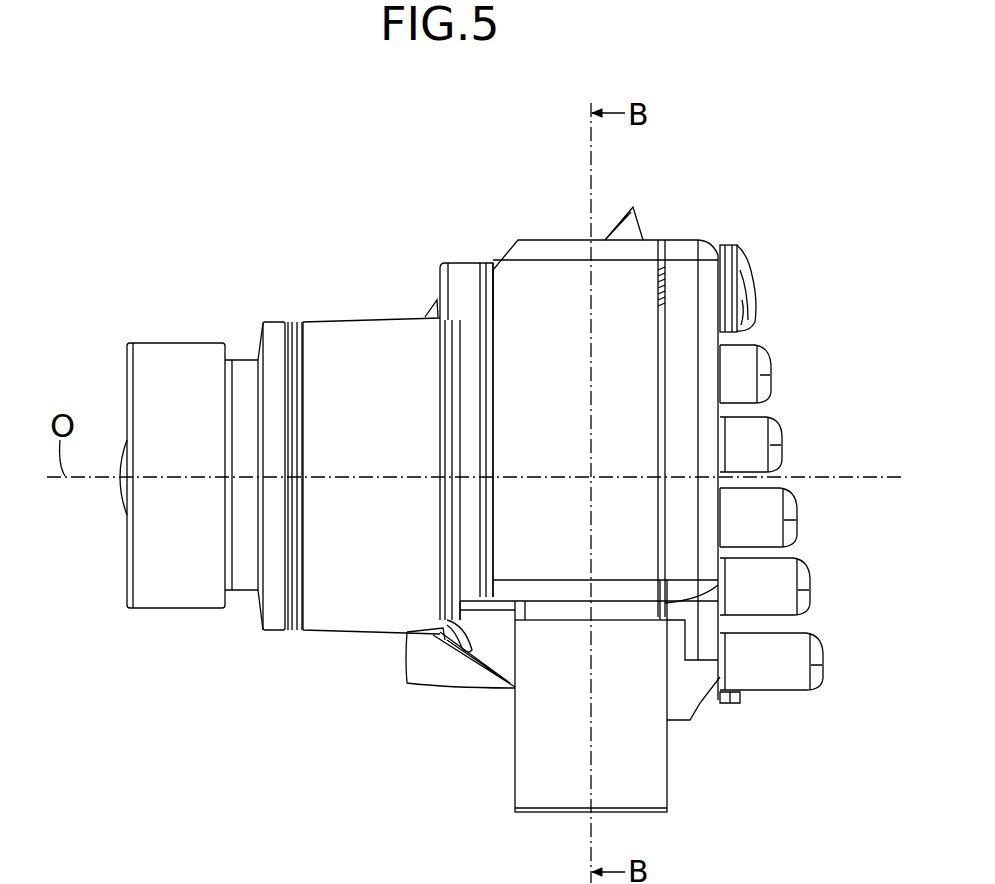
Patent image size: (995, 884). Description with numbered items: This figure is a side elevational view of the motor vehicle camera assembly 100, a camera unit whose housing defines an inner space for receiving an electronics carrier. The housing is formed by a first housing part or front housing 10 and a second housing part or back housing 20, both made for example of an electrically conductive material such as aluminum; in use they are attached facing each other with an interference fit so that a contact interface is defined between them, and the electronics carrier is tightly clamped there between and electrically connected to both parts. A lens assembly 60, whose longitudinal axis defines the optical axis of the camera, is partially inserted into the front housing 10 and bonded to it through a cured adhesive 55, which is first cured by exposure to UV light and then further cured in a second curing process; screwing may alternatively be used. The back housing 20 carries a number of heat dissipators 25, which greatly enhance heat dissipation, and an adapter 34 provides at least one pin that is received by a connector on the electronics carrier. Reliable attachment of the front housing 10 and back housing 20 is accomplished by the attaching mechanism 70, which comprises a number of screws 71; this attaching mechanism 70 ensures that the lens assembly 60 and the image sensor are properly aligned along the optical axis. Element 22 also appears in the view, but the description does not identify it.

The motor vehicle camera assembly 100 is at (283, 157).
The first housing part 10 is at (537, 237).
The second housing part 20 is at (680, 233).
The arm 22 is at (346, 752).
The heat dissipators 25 is at (767, 683).
The adapter 34 is at (647, 775).
The cured adhesive 55 is at (297, 327).
The lens assembly 60 is at (118, 510).
The attaching mechanism 70 is at (763, 270).
The screws 71 is at (733, 247).